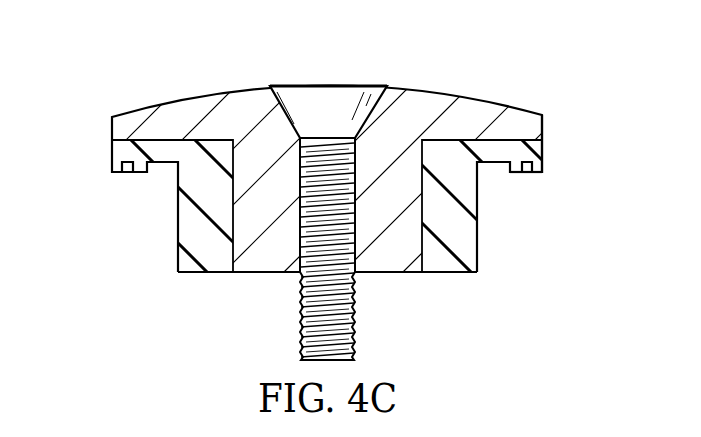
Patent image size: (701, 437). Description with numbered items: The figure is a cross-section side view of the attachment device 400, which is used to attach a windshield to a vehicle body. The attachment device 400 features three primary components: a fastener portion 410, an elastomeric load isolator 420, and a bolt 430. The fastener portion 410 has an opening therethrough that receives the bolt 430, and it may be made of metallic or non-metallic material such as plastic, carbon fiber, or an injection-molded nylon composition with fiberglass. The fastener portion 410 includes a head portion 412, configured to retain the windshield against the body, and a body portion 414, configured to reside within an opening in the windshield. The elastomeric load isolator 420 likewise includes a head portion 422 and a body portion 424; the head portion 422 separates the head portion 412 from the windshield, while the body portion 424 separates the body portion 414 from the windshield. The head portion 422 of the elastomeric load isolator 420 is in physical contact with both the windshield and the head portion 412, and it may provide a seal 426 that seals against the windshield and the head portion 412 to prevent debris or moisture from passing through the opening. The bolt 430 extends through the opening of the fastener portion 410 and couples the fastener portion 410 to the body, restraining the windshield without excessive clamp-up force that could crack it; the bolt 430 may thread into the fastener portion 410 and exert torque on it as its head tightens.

The attachment device 400 is at (348, 182).
The fastener portion 410 is at (343, 182).
The head portion 412 is at (546, 123).
The body portion 414 is at (266, 262).
The elastomeric load isolator 420 is at (368, 223).
The head portion 422 is at (120, 150).
The body portion 424 is at (452, 265).
The seal 426 is at (503, 174).
The bolt 430 is at (328, 85).